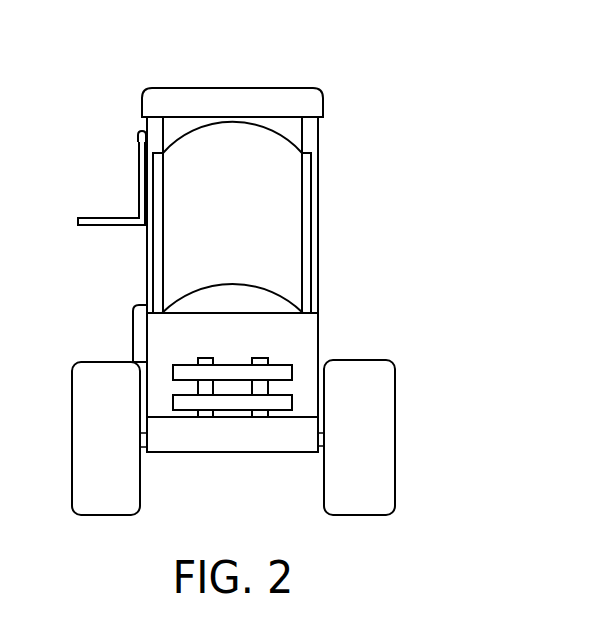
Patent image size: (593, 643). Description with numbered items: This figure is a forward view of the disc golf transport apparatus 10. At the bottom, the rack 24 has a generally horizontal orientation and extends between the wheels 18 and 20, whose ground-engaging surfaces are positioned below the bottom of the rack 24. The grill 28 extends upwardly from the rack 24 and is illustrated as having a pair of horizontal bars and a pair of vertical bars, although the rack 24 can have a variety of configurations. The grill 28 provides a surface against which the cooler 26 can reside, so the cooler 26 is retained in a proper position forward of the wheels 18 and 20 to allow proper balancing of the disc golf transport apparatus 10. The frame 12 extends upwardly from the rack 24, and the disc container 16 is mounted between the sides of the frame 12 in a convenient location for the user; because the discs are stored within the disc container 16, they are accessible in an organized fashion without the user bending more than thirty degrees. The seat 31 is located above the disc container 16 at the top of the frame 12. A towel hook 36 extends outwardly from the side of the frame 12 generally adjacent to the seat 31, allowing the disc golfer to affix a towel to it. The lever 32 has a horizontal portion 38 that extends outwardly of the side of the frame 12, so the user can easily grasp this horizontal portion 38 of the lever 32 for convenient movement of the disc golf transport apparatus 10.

The disc golf transport apparatus 10 is at (395, 261).
The frame 12 is at (320, 222).
The disc container 16 is at (288, 180).
The wheel 18 is at (93, 380).
The wheel 20 is at (368, 380).
The rack 24 is at (224, 443).
The cooler 26 is at (153, 333).
The grill 28 is at (280, 366).
The seat 31 is at (233, 102).
The lever 32 is at (98, 218).
The towel hook 36 is at (137, 141).
The horizontal portion 38 is at (90, 226).